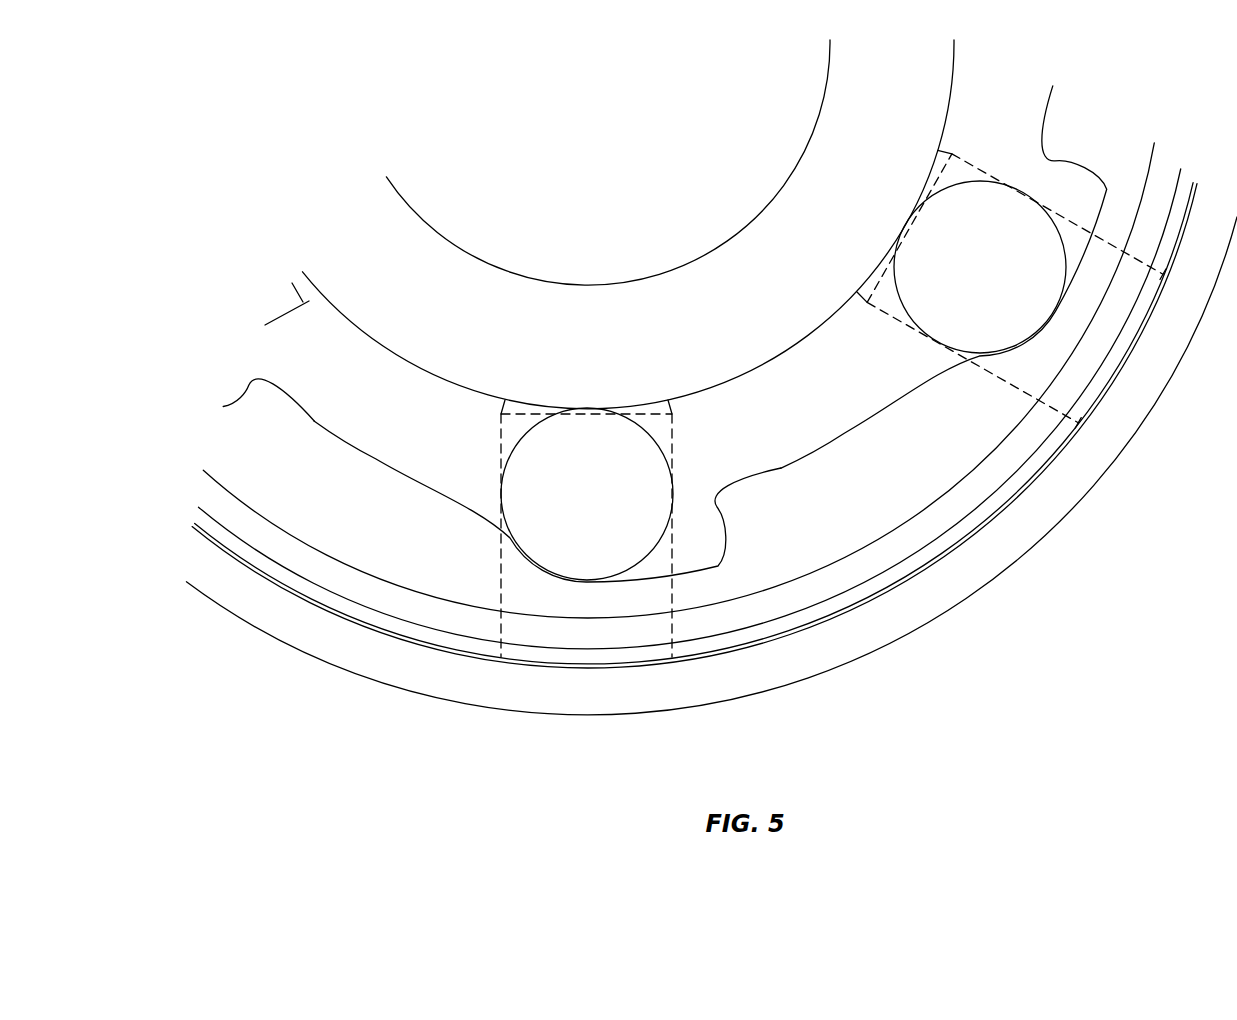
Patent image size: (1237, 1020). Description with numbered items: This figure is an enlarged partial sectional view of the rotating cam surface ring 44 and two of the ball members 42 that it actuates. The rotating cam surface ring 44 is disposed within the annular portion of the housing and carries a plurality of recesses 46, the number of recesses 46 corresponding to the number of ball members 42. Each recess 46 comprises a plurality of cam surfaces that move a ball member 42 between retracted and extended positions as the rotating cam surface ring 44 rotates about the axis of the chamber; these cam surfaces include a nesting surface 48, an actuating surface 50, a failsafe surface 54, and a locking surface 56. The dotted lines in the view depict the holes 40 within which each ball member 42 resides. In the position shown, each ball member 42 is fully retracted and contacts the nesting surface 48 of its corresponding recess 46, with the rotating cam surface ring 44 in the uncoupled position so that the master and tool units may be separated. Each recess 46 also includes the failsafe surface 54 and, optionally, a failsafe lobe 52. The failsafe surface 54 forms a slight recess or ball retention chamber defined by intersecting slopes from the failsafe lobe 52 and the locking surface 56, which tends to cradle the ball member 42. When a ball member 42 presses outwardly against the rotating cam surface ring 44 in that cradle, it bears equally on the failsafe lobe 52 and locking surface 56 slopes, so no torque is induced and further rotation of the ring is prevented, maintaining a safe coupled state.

The holes 40 is at (873, 280).
The ball member 42 is at (574, 505).
The rotating cam surface ring 44 is at (772, 548).
The recess 46 is at (696, 488).
The nesting surface 48 is at (550, 573).
The actuating surface 50 is at (507, 540).
The failsafe lobe 52 is at (486, 513).
The failsafe surface 54 is at (457, 505).
The locking surface 56 is at (380, 460).